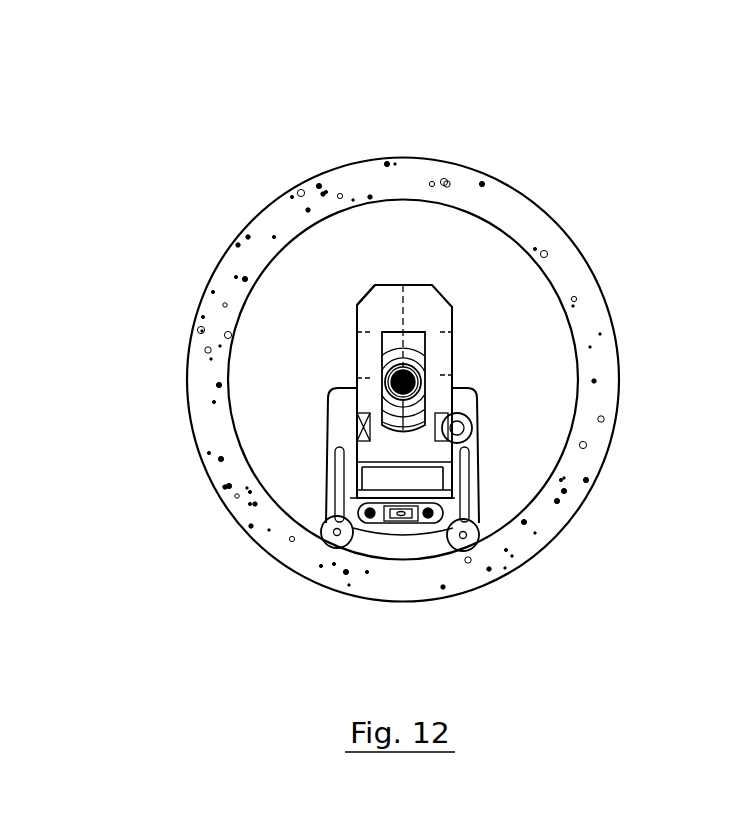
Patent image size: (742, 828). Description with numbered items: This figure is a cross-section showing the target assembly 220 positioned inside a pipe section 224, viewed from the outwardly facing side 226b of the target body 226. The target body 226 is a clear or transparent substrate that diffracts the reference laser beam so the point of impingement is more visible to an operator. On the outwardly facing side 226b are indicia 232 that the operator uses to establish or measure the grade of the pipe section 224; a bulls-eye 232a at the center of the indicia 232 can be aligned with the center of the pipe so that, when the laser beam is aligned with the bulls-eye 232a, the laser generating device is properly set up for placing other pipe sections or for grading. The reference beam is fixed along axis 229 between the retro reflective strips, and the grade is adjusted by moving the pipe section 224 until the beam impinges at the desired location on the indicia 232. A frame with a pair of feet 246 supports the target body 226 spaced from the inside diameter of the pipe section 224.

The target assembly 220 is at (478, 427).
The pipe section 224 is at (514, 185).
The target body 226 is at (432, 286).
The outwardly facing side 226b is at (371, 313).
The axis 229 is at (405, 288).
The indicia 232 is at (421, 332).
The bulls-eye 232a is at (402, 370).
The feet 246 is at (322, 526).